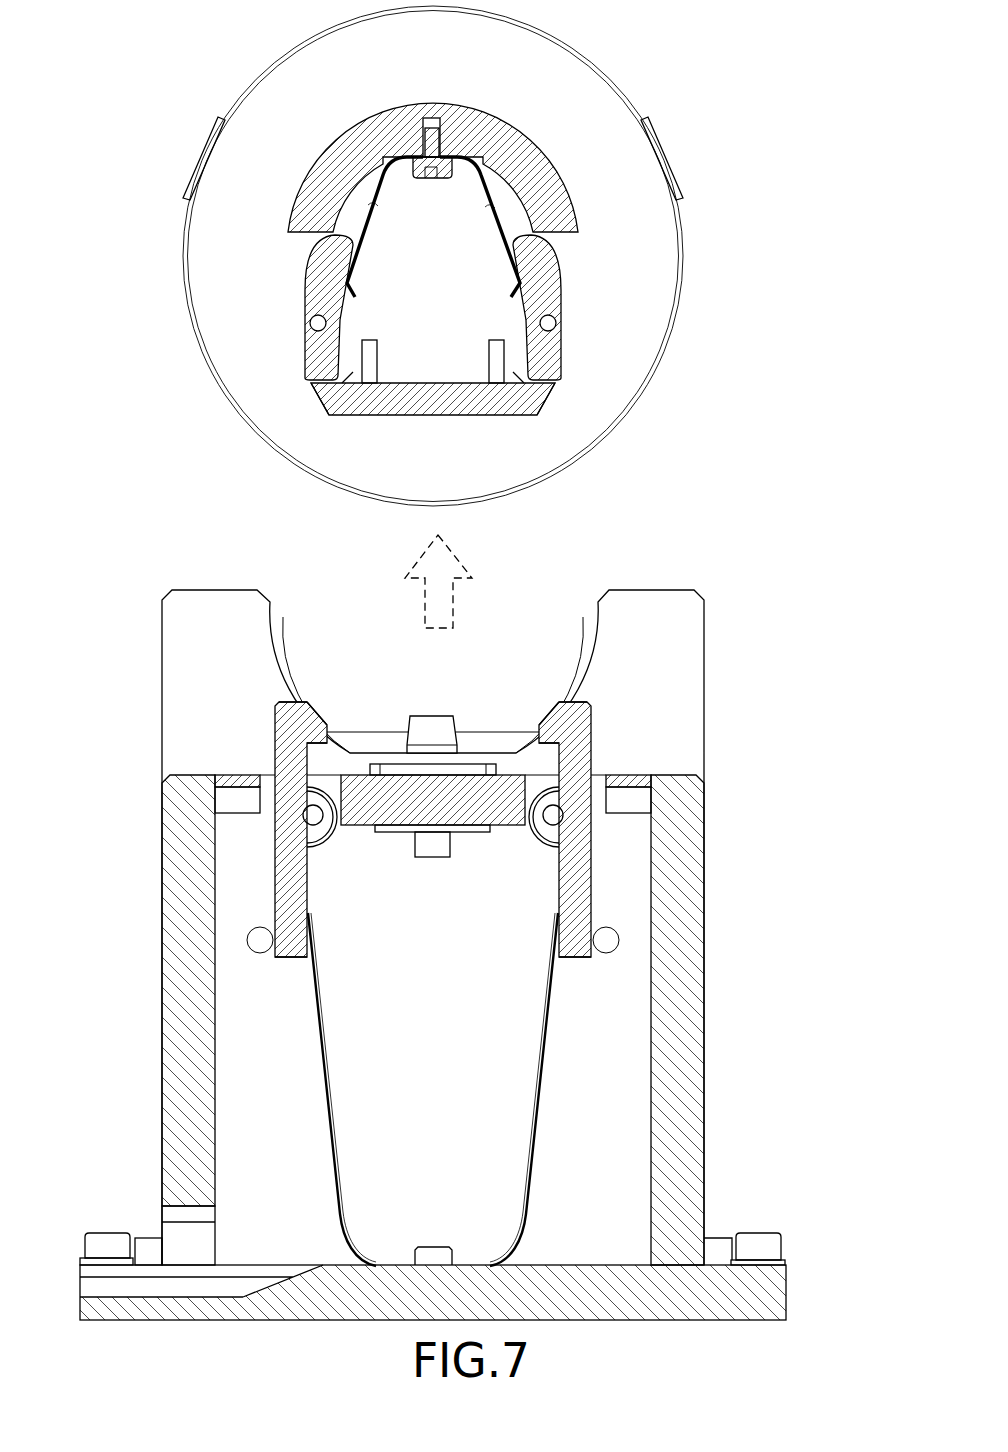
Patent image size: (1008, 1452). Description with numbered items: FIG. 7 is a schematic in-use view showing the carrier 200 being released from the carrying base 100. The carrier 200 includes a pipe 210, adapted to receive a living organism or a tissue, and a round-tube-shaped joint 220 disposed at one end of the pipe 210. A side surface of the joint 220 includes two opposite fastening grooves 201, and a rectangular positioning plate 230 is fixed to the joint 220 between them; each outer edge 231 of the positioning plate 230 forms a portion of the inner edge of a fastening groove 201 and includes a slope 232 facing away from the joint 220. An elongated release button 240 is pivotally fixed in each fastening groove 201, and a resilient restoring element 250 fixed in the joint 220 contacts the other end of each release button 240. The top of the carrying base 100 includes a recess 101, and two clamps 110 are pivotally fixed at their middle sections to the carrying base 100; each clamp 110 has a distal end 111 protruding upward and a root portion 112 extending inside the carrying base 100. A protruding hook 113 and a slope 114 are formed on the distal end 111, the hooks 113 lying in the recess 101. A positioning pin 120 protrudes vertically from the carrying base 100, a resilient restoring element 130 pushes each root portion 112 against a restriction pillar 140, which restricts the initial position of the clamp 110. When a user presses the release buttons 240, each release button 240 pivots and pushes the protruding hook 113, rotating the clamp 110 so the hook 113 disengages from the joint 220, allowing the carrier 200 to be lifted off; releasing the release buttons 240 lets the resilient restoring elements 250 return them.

The carrying base 100 is at (715, 909).
The recess 101 is at (537, 630).
The clamp 110 is at (273, 854).
The distal end 111 is at (275, 703).
The root portion 112 is at (292, 958).
The protruding hook 113 is at (323, 735).
The slope 114 is at (273, 712).
The positioning pin 120 is at (428, 727).
The resilient restoring element 130 is at (327, 1088).
The restriction pillar 140 is at (257, 941).
The carrier 200 is at (703, 207).
The fastening groove 201 is at (293, 253).
The pipe 210 is at (667, 300).
The joint 220 is at (352, 152).
The positioning plate 230 is at (430, 400).
The outer edge 231 is at (312, 384).
The slope 232 is at (320, 400).
The release button 240 is at (310, 277).
The resilient restoring element 250 is at (373, 205).